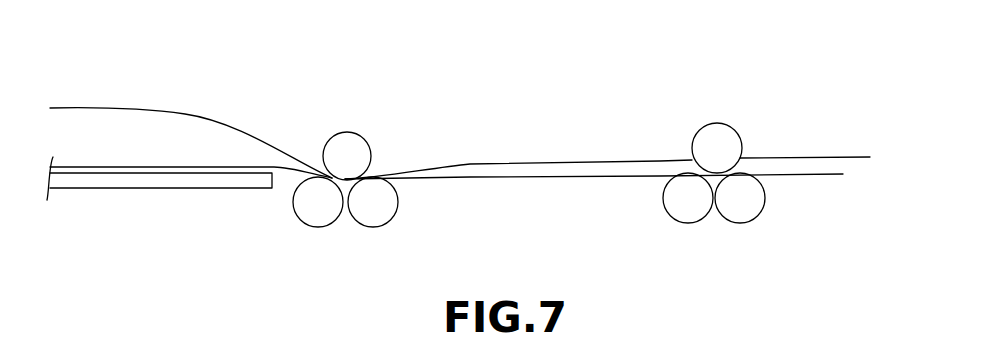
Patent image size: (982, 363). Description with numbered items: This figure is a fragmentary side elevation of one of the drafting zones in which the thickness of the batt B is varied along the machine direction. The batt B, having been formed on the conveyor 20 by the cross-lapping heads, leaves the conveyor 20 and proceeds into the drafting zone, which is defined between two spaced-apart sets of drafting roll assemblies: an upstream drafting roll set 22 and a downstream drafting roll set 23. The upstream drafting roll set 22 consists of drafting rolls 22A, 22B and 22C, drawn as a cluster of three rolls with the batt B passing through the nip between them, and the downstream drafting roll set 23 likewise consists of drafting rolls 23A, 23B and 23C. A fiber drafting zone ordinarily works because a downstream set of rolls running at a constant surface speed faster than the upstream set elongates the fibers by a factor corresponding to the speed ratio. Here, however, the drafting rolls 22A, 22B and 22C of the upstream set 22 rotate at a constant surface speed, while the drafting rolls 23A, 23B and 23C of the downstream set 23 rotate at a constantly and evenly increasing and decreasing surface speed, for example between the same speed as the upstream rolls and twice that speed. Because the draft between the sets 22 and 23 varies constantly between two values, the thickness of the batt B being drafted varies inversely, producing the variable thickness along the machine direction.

The batt B is at (170, 140).
The conveyor 20 is at (153, 180).
The upstream drafting roll set 22 is at (337, 108).
The drafting roll 22A is at (318, 210).
The drafting roll 22B is at (377, 202).
The drafting roll 22C is at (355, 153).
The downstream drafting roll set 23 is at (695, 106).
The drafting roll 23A is at (692, 203).
The drafting roll 23B is at (745, 205).
The drafting roll 23C is at (722, 143).